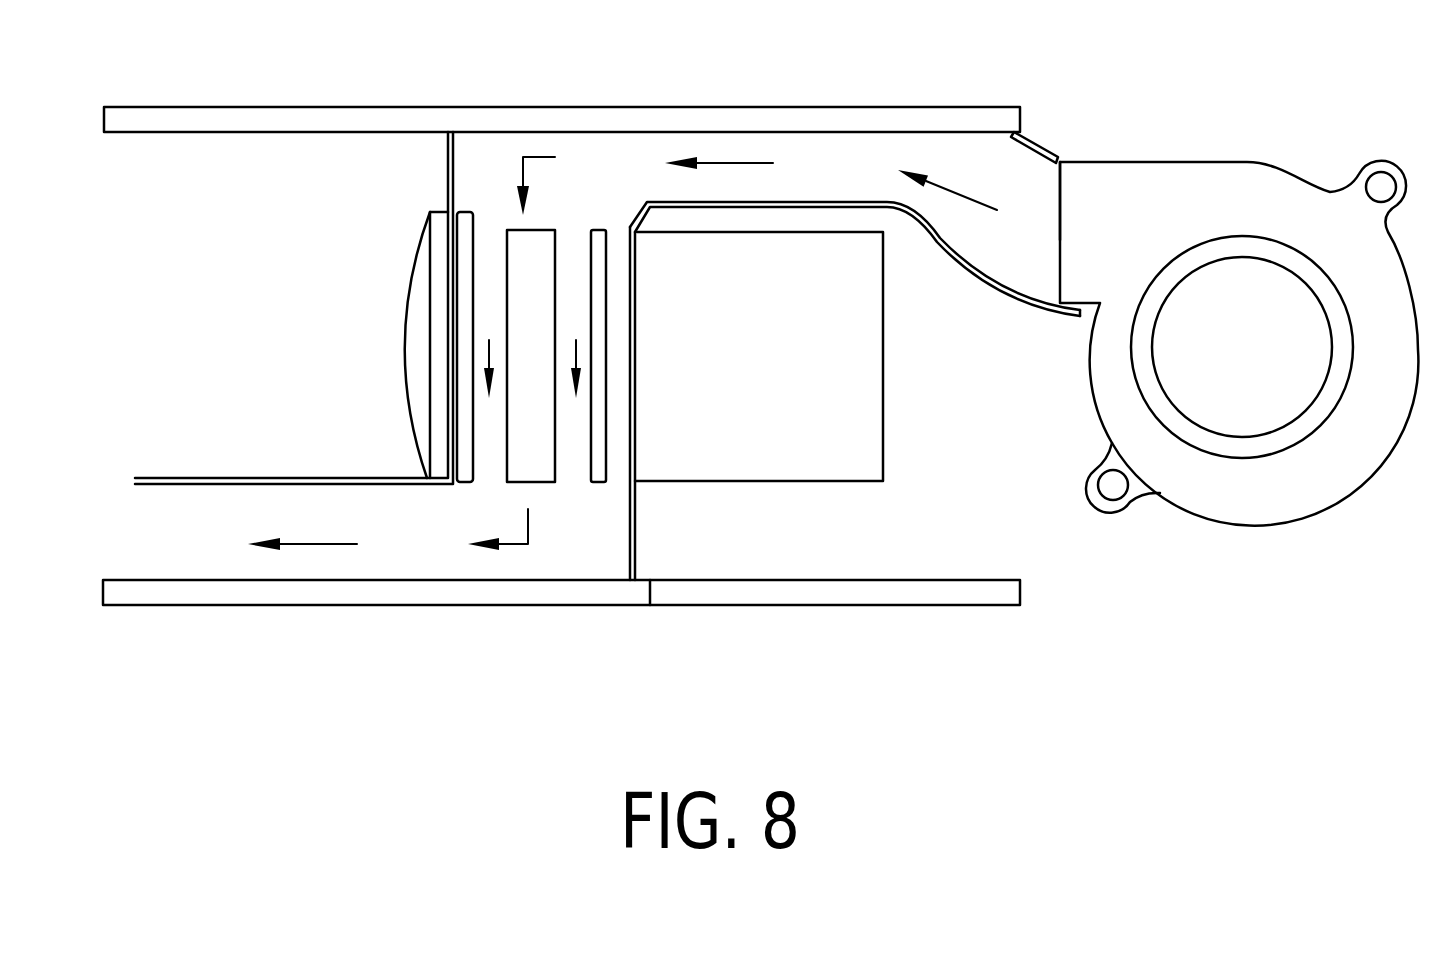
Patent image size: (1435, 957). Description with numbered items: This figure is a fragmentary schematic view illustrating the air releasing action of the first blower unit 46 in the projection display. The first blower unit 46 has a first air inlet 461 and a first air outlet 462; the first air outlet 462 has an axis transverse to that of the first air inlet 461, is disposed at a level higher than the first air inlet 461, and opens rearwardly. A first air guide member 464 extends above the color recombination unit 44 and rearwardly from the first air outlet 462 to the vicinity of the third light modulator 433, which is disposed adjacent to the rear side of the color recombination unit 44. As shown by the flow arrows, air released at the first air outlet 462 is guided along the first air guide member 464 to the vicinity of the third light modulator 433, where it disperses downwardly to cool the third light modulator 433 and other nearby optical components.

The third light modulator 433 is at (556, 493).
The color recombination unit 44 is at (787, 470).
The first blower unit 46 is at (1239, 388).
The first air inlet 461 is at (1220, 405).
The first air outlet 462 is at (1060, 240).
The first air guide member 464 is at (818, 165).